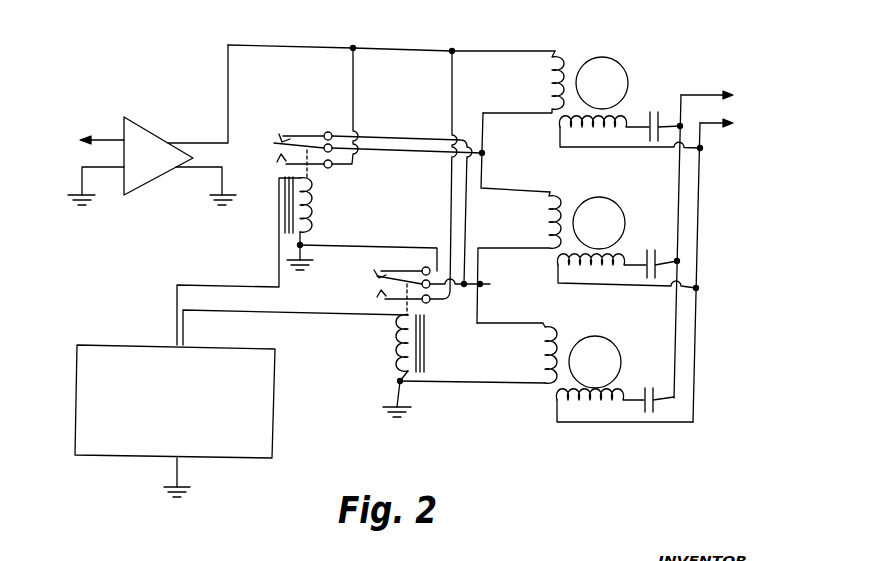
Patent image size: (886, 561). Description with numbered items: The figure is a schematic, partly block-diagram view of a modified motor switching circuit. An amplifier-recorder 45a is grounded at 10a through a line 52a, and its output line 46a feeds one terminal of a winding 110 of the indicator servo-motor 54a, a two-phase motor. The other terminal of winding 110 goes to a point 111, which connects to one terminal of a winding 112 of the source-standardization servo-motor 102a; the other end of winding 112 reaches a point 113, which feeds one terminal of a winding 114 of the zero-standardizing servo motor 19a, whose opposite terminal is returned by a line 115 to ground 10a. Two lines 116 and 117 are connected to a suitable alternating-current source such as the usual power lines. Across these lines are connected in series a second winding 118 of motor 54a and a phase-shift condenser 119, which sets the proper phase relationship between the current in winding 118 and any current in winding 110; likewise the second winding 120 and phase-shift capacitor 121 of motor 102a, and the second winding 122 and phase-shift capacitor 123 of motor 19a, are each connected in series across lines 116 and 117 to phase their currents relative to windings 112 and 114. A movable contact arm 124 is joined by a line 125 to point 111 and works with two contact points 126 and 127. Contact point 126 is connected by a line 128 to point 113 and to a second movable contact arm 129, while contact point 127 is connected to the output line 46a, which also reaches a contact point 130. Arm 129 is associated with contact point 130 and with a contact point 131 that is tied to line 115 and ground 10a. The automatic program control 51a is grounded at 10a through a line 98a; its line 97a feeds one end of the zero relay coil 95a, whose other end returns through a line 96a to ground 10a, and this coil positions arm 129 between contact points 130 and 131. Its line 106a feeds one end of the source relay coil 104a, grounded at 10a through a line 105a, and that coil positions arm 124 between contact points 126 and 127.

The ground 10a is at (72, 200).
The zero-standardizing servo motor 19a is at (621, 364).
The amplifier-recorder 45a is at (136, 119).
The output line 46a is at (228, 78).
The automatic program control 51a is at (75, 397).
The line 52a is at (222, 186).
The indicator servo-motor 54a is at (611, 60).
The zero relay coil 95a is at (382, 343).
The line 96a is at (399, 381).
The line 97a is at (295, 327).
The line 98a is at (180, 466).
The source-standardization servo-motor 102a is at (624, 220).
The source relay coil 104a is at (316, 220).
The line 105a is at (306, 240).
The line 106a is at (177, 301).
The winding 110 is at (548, 78).
The point 111 is at (483, 152).
The winding 112 is at (546, 210).
The point 113 is at (490, 284).
The winding 114 is at (542, 353).
The line 115 is at (516, 383).
The line 116 is at (700, 128).
The line 117 is at (682, 96).
The second winding 118 is at (574, 147).
The phase-shift condenser 119 is at (648, 147).
The second winding 120 is at (589, 285).
The phase-shift capacitor 121 is at (645, 278).
The second winding 122 is at (603, 404).
The phase-shift capacitor 123 is at (649, 413).
The movable contact arm 124 is at (274, 143).
The line 125 is at (343, 118).
The contact point 126 is at (323, 133).
The contact point 127 is at (329, 168).
The line 128 is at (412, 137).
The movable contact arm 129 is at (375, 279).
The contact point 130 is at (428, 303).
The contact point 131 is at (426, 266).